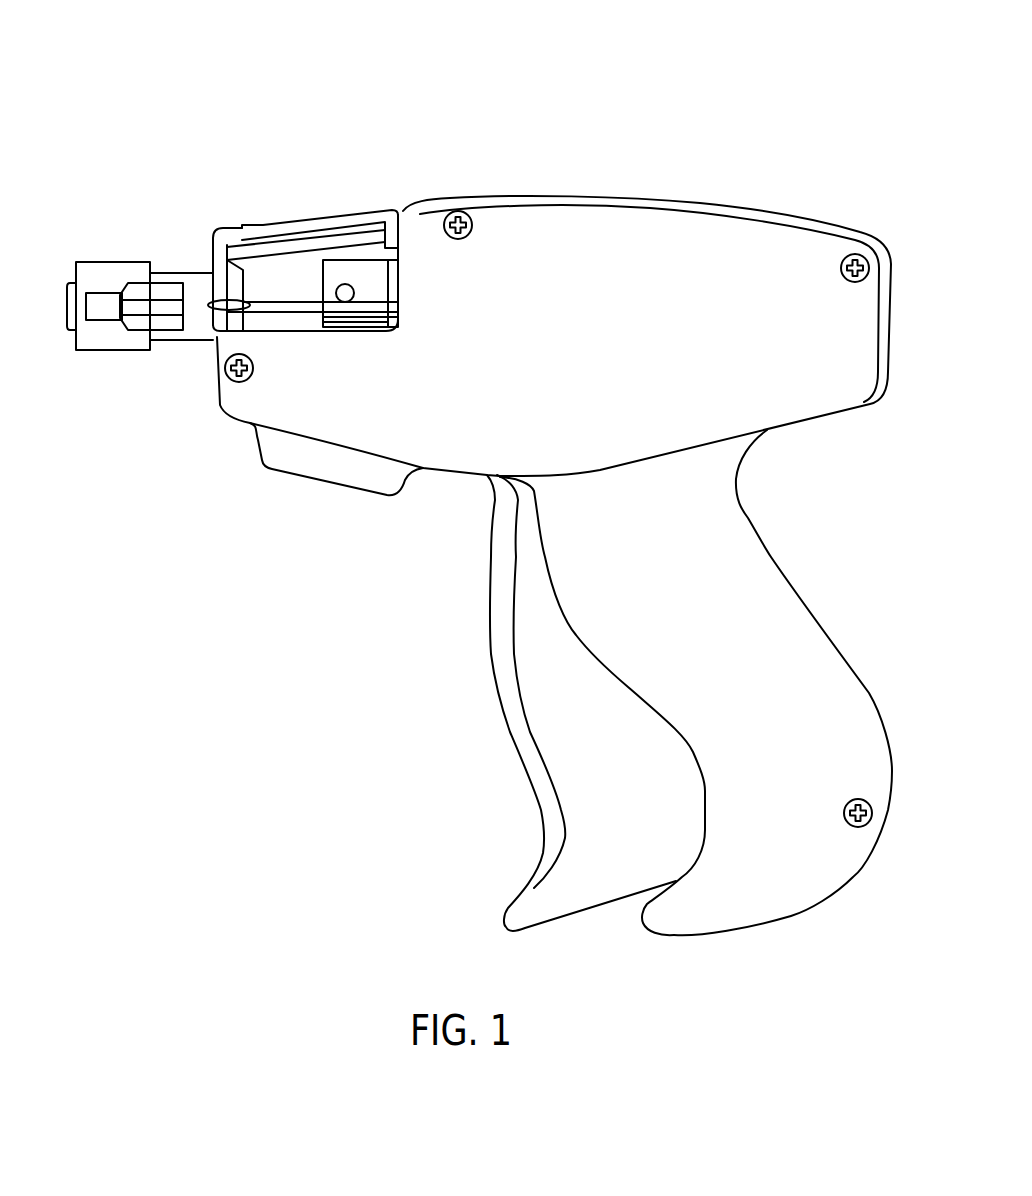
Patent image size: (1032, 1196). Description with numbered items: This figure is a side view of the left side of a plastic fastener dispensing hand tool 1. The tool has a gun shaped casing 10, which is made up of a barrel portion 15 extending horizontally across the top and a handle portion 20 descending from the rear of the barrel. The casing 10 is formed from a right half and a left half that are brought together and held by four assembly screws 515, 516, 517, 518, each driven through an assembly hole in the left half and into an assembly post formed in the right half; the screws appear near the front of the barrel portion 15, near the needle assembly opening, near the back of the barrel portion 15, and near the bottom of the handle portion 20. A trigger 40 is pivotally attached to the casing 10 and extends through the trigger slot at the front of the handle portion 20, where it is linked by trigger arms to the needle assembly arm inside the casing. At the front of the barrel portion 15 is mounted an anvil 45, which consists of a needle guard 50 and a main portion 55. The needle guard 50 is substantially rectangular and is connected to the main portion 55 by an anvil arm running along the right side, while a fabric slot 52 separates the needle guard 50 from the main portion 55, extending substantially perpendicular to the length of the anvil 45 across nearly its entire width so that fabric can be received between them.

The plastic fastener dispensing hand tool 1 is at (722, 107).
The casing 10 is at (782, 212).
The barrel portion 15 is at (533, 185).
The handle portion 20 is at (857, 605).
The trigger 40 is at (541, 830).
The anvil 45 is at (280, 218).
The needle guard 50 is at (97, 248).
The fabric slot 52 is at (197, 318).
The main portion 55 is at (332, 208).
The assembly screw 515 is at (250, 376).
The assembly screw 516 is at (466, 235).
The assembly screw 517 is at (843, 278).
The assembly screw 518 is at (846, 804).